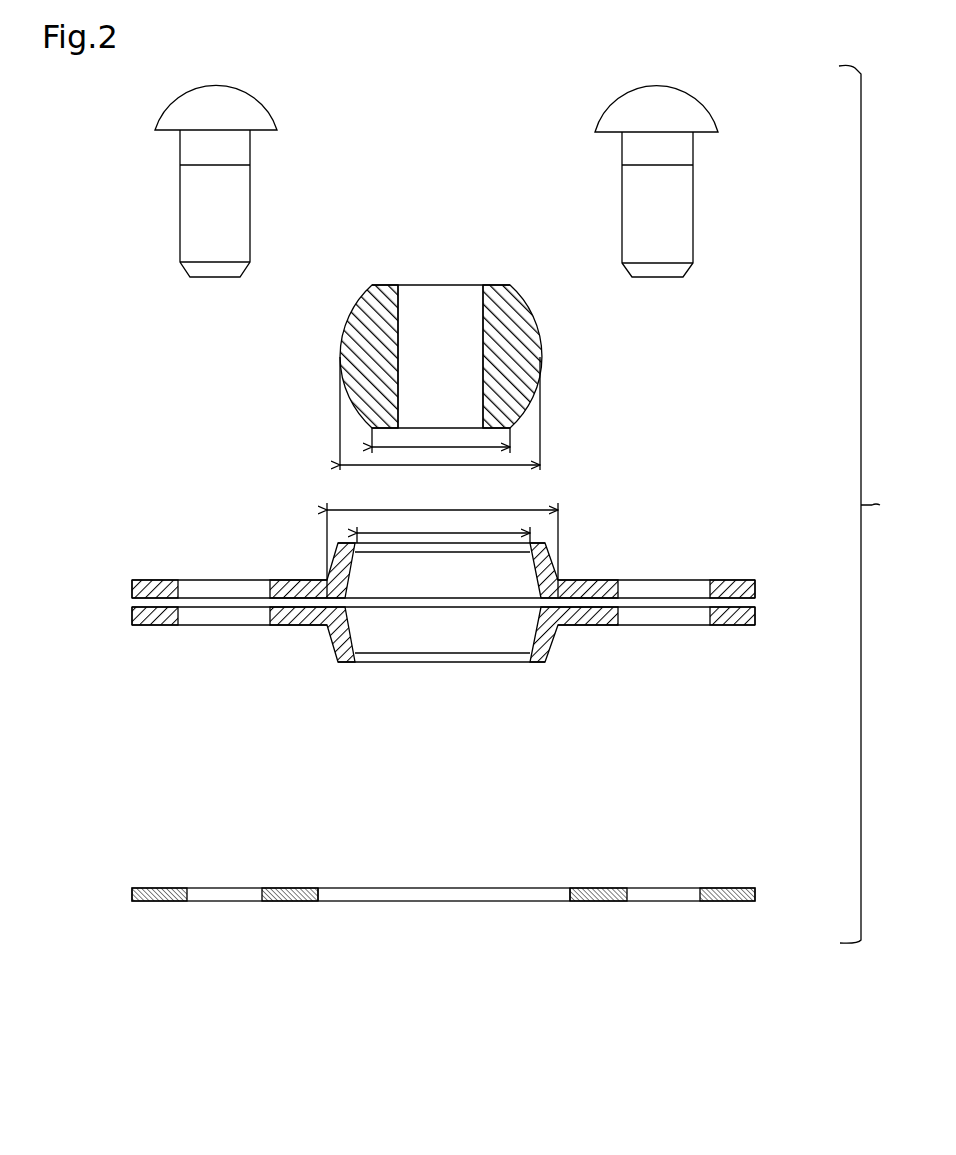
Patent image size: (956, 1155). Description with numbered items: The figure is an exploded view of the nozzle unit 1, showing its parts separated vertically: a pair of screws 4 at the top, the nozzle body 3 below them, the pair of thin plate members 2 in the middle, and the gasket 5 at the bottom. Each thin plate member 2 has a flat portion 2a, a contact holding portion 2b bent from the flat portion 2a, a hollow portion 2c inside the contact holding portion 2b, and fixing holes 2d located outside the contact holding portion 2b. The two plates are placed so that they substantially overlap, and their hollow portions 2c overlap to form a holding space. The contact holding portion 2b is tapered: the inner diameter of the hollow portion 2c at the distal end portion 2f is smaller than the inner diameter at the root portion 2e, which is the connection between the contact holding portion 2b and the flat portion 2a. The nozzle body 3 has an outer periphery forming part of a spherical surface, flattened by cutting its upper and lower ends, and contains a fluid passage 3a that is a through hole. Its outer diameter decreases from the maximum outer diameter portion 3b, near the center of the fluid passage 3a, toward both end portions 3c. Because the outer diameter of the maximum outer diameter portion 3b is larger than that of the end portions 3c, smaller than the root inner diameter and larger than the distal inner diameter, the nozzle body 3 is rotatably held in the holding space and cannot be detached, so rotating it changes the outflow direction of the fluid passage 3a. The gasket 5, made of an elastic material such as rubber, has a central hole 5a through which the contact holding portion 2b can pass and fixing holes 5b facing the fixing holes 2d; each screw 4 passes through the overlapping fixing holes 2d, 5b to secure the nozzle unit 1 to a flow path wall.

The nozzle unit 1 is at (870, 504).
The thin plate member 2 is at (476, 590).
The flat portion 2a is at (600, 625).
The contact holding portion 2b is at (340, 572).
The hollow portion 2c is at (362, 572).
The fixing hole 2d is at (188, 580).
The root portion 2e is at (328, 582).
The distal end portion 2f is at (355, 545).
The nozzle body 3 is at (467, 317).
The fluid passage 3a is at (482, 302).
The maximum outer diameter portion 3b is at (540, 350).
The end portion 3c is at (505, 288).
The screw 4 is at (230, 108).
The gasket 5 is at (474, 915).
The central hole 5a is at (565, 901).
The fixing hole 5b is at (262, 901).